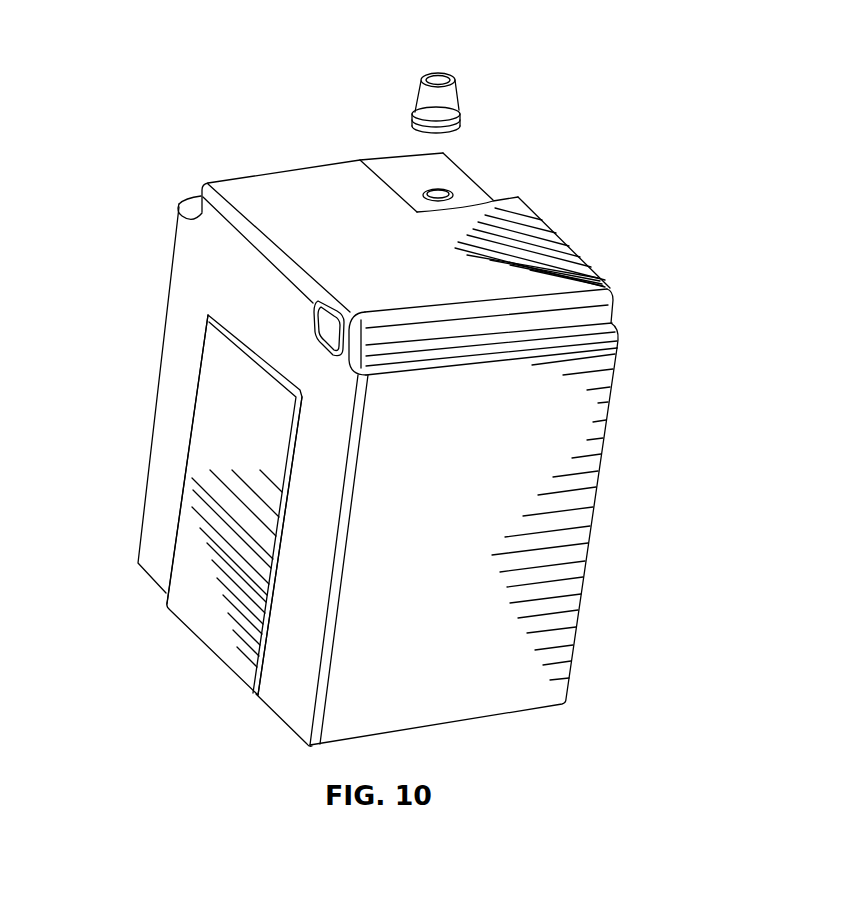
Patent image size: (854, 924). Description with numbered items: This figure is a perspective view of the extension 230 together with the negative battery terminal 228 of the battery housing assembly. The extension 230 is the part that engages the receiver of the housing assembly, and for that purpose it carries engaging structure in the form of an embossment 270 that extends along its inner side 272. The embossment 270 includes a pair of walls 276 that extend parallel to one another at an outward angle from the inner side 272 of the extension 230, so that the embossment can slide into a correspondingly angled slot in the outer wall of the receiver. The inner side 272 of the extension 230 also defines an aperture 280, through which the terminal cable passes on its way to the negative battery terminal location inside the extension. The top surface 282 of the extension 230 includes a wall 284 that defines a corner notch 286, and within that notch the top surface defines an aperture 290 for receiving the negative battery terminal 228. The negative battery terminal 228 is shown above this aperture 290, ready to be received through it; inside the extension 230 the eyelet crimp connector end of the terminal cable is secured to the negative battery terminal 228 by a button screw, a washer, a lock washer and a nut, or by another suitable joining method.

The negative battery terminal 228 is at (447, 64).
The extension 230 is at (557, 524).
The embossment 270 is at (187, 523).
The inner side 272 is at (318, 471).
The walls 276 is at (198, 378).
The aperture 280 is at (323, 346).
The top surface 282 is at (295, 188).
The wall 284 is at (480, 204).
The corner notch 286 is at (393, 170).
The aperture 290 is at (441, 190).